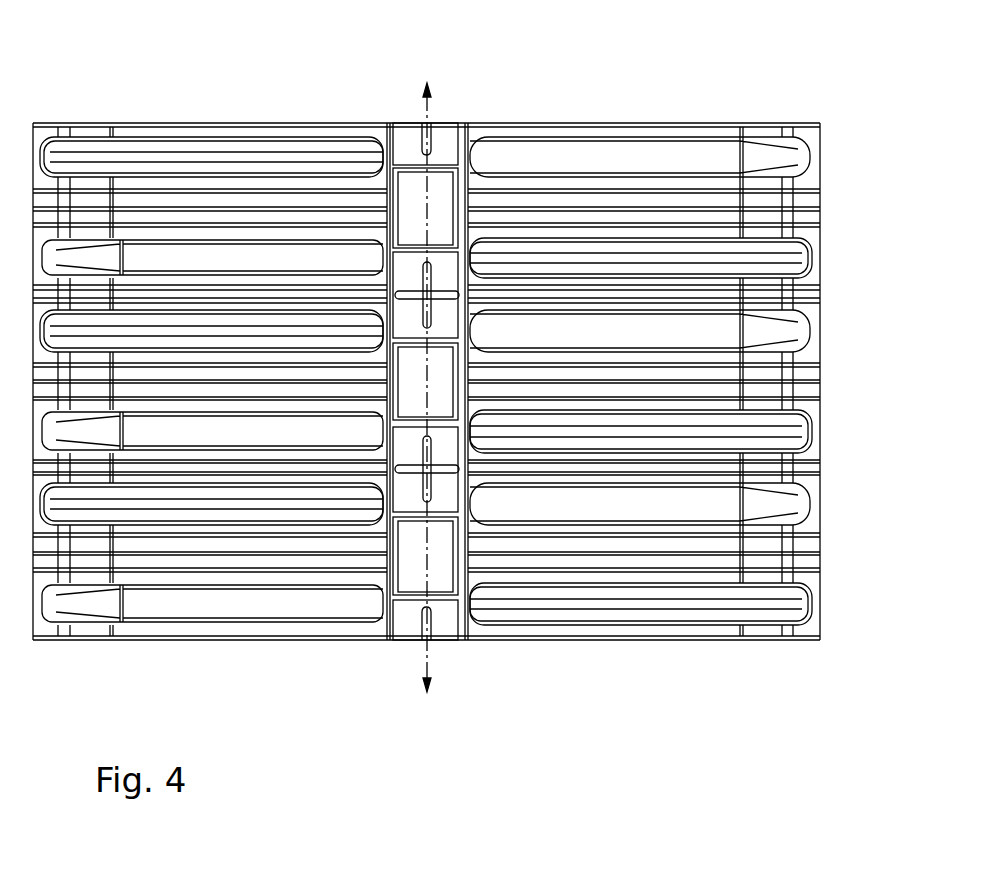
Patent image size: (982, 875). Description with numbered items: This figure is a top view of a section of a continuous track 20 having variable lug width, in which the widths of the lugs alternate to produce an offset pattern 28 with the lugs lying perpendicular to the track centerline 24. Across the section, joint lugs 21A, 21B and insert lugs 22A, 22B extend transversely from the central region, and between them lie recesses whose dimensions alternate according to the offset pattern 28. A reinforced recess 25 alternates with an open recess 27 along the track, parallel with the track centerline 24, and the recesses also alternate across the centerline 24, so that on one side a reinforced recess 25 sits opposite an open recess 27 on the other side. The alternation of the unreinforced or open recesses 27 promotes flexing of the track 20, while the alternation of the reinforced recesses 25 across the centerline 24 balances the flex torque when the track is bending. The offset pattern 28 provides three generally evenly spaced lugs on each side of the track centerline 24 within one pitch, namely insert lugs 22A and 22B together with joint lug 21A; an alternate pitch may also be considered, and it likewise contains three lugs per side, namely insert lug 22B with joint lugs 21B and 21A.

The track 20 is at (378, 628).
The joint lug 21A is at (808, 470).
The joint lug 21B is at (808, 295).
The insert lug 22A is at (808, 379).
The insert lug 22B is at (808, 551).
The track centerline 24 is at (427, 665).
The reinforced recess 25 is at (282, 266).
The open recess 27 is at (360, 161).
The offset pattern 28 is at (632, 105).